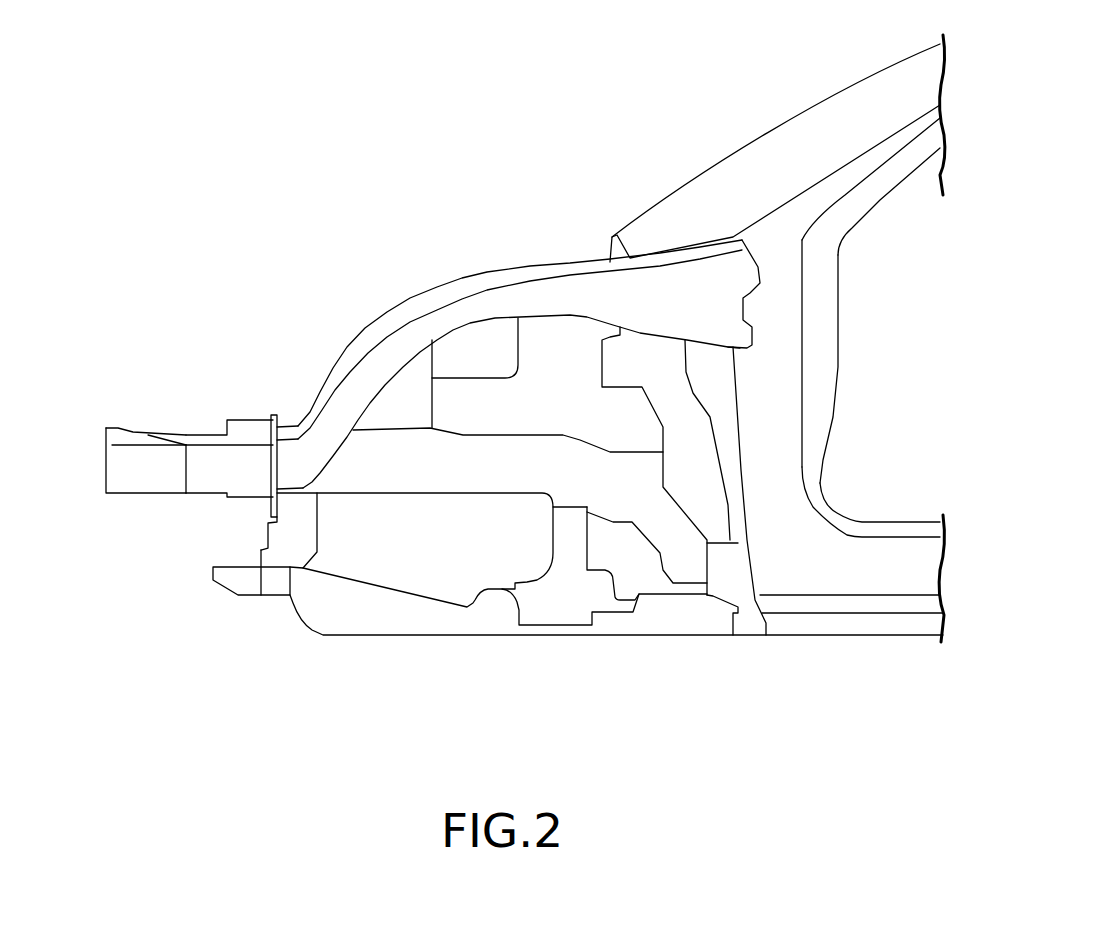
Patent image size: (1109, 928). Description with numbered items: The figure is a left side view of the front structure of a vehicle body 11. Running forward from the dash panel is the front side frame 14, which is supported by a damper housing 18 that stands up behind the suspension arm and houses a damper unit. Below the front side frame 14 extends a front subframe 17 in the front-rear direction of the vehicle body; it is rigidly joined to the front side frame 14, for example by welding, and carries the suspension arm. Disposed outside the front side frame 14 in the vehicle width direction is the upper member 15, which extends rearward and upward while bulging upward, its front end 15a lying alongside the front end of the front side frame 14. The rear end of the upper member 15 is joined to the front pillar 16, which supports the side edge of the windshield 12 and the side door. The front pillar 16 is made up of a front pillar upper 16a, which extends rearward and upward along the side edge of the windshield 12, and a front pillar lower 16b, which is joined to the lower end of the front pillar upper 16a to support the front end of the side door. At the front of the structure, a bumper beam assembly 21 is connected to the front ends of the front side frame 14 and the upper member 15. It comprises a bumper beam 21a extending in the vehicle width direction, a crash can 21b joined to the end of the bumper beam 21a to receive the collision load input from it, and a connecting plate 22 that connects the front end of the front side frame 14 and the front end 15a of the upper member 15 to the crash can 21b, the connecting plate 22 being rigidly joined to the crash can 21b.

The vehicle body 11 is at (512, 238).
The windshield 12 is at (757, 132).
The front side frame 14 is at (368, 487).
The upper member 15 is at (368, 340).
The front end of upper member 15a is at (273, 455).
The front pillar 16 is at (787, 307).
The front pillar upper 16a is at (872, 153).
The front pillar lower 16b is at (787, 453).
The front subframe 17 is at (442, 623).
The damper housing 18 is at (478, 377).
The bumper beam assembly 21 is at (92, 420).
The bumper beam 21a is at (127, 493).
The crash can 21b is at (248, 497).
The connecting plate 22 is at (273, 415).